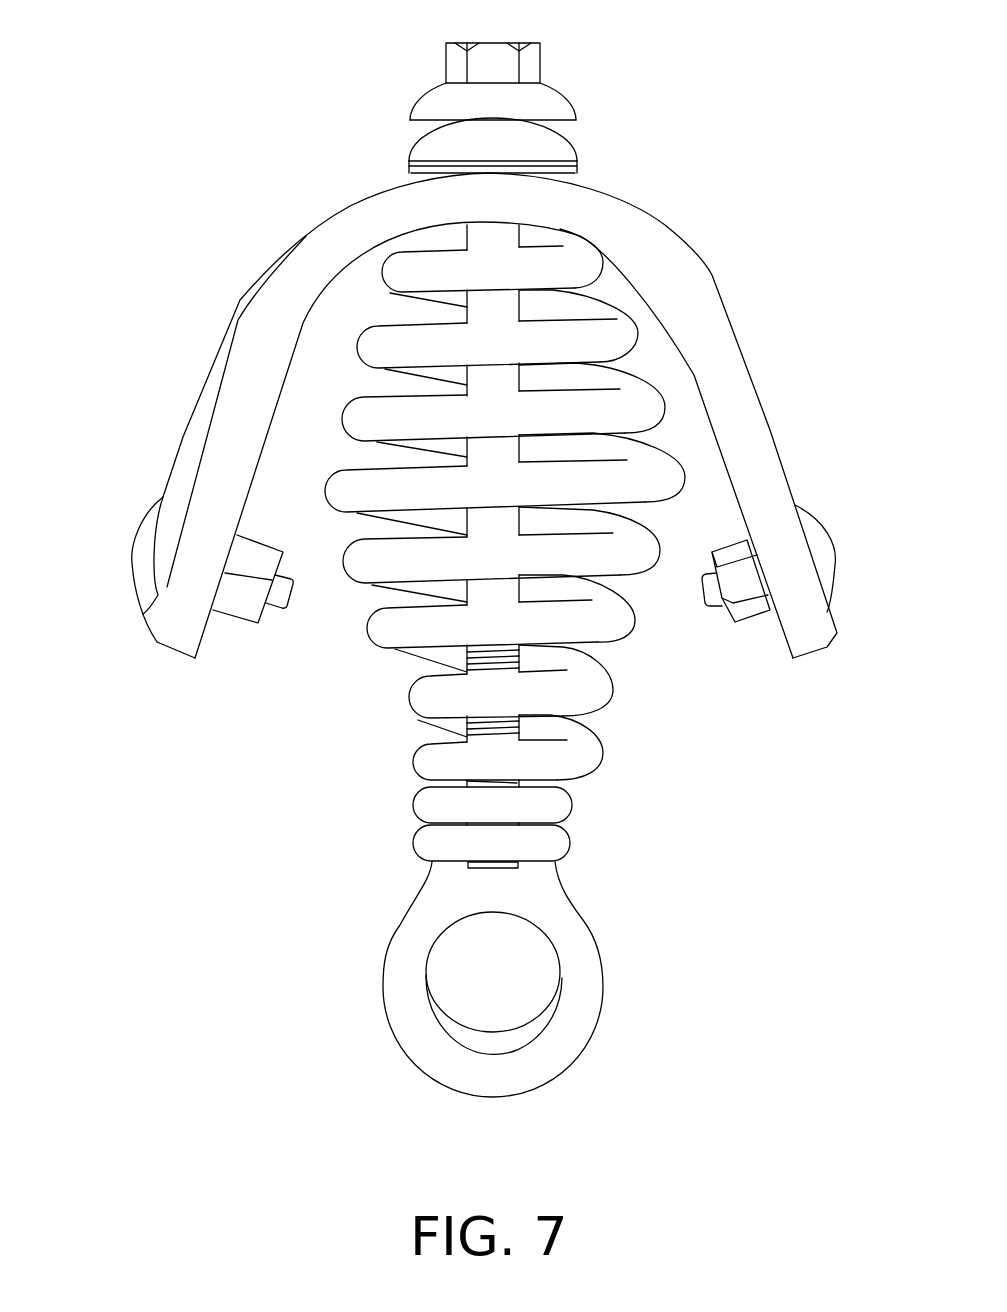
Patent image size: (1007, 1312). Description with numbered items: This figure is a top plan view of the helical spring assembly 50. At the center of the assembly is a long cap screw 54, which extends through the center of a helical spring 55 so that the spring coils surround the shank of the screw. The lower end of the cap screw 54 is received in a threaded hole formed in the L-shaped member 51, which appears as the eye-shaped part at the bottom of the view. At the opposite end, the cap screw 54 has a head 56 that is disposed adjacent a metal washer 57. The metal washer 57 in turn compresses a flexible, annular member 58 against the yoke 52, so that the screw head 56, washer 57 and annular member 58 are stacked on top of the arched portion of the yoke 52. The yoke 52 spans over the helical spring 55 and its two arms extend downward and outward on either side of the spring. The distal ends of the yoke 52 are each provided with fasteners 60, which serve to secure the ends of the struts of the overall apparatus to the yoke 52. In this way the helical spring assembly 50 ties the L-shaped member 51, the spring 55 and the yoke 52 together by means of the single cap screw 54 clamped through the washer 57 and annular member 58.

The helical spring assembly 50 is at (258, 184).
The L-shaped member 51 is at (587, 957).
The yoke 52 is at (250, 375).
The cap screw 54 is at (488, 862).
The helical spring 55 is at (383, 627).
The head 56 is at (483, 56).
The metal washer 57 is at (548, 100).
The flexible annular member 58 is at (557, 152).
The fasteners 60 is at (143, 542).